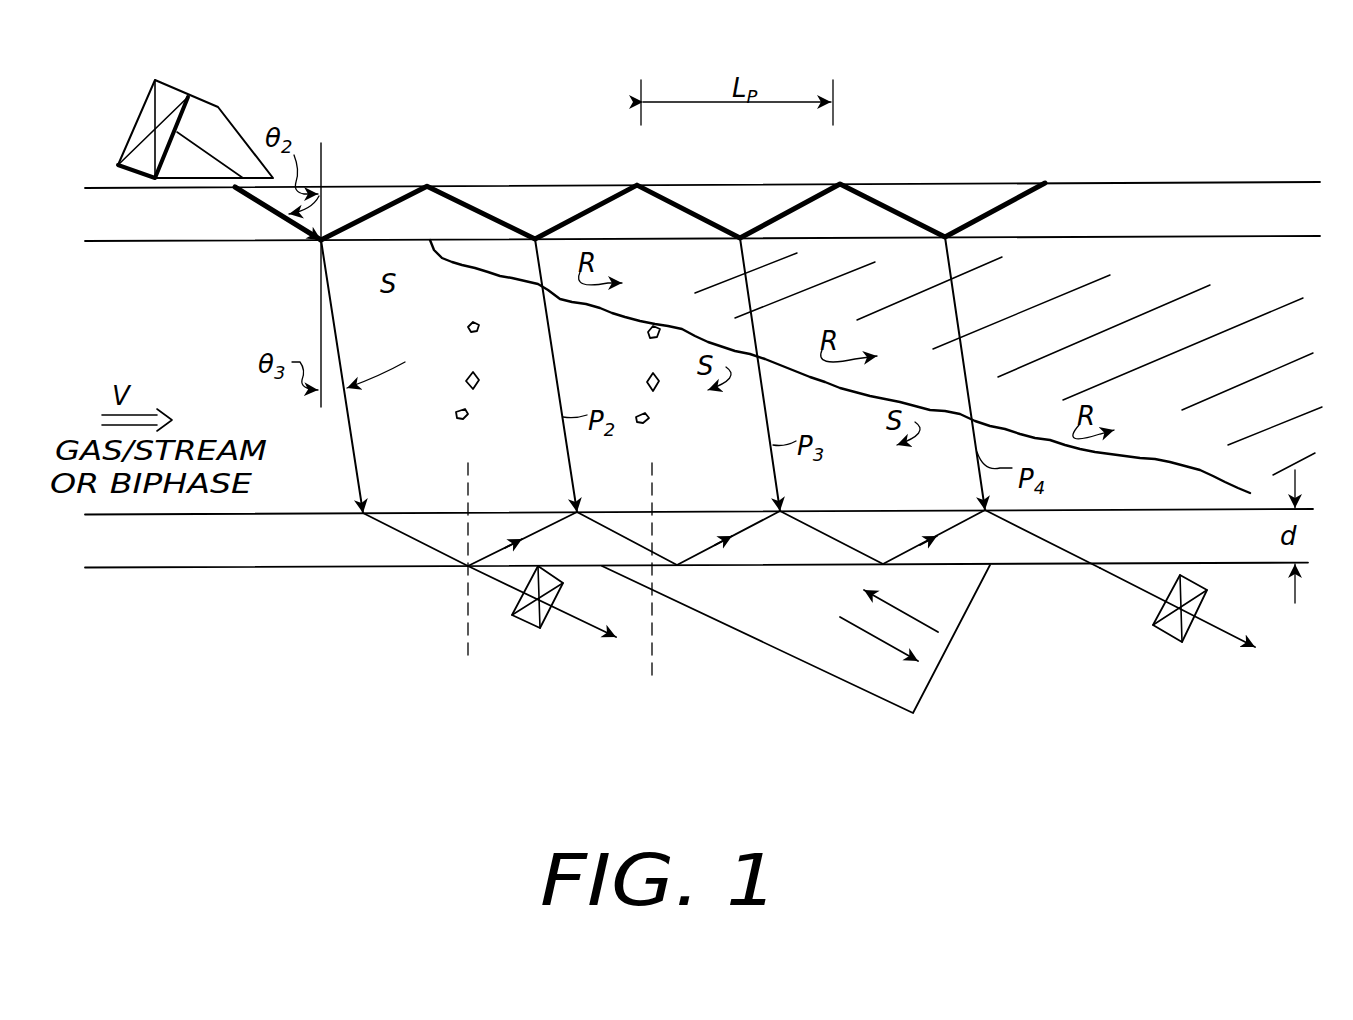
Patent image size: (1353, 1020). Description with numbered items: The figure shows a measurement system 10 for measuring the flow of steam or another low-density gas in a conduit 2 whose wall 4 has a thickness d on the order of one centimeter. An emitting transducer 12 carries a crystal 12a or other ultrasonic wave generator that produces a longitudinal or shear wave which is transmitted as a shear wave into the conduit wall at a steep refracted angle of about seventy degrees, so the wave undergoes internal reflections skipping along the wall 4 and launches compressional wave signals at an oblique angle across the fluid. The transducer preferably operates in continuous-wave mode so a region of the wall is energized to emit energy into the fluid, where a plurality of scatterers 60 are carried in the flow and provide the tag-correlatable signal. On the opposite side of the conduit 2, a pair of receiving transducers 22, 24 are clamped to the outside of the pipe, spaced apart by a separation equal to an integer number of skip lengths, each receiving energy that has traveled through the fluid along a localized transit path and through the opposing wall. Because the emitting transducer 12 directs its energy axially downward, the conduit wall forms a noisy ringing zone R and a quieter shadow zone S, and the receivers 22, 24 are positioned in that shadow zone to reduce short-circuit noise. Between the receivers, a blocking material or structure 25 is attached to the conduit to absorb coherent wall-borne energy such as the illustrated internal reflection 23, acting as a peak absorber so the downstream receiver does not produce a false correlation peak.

The conduit 2 is at (284, 567).
The wall 4 is at (1153, 225).
The measurement system 10 is at (486, 104).
The emitting transducer 12 is at (214, 146).
The crystal 12a is at (173, 93).
The receiving transducer 22 is at (604, 748).
The internal reflection 23 is at (537, 521).
The receiving transducer 24 is at (1238, 748).
The blocking material or structure 25 is at (806, 650).
The scatterers 60 is at (487, 394).